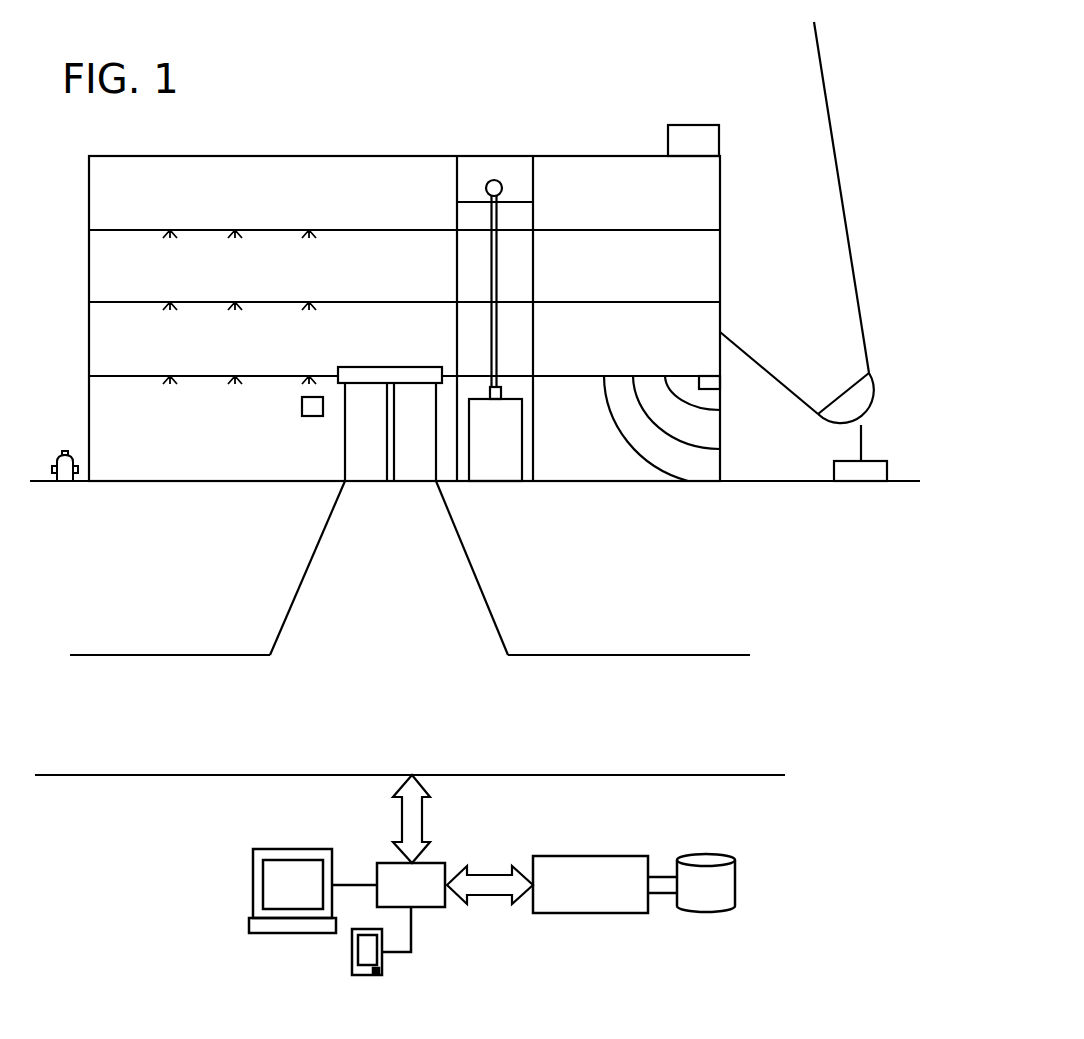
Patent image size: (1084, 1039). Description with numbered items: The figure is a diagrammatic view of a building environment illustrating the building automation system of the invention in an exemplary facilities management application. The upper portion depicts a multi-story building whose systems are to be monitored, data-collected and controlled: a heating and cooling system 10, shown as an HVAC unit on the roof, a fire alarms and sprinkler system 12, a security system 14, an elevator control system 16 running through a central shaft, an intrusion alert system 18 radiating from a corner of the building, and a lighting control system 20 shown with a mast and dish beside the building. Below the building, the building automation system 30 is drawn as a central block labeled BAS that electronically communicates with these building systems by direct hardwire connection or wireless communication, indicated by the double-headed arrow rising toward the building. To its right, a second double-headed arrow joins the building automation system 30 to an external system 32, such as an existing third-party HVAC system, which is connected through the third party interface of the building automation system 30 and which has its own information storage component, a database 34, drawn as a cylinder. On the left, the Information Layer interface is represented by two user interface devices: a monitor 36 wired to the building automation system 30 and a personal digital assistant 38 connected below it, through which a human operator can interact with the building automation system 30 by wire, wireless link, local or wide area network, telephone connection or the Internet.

The heating and cooling system 10 is at (693, 125).
The fire alarms and sprinkler system 12 is at (63, 452).
The security system 14 is at (302, 405).
The elevator control system 16 is at (480, 153).
The intrusion alert system 18 is at (723, 383).
The lighting control system 20 is at (860, 483).
The building automation system 30 is at (440, 863).
The external system 32 is at (590, 856).
The database 34 is at (705, 912).
The monitor 36 is at (292, 849).
The personal digital assistant (PDA) 38 is at (352, 952).